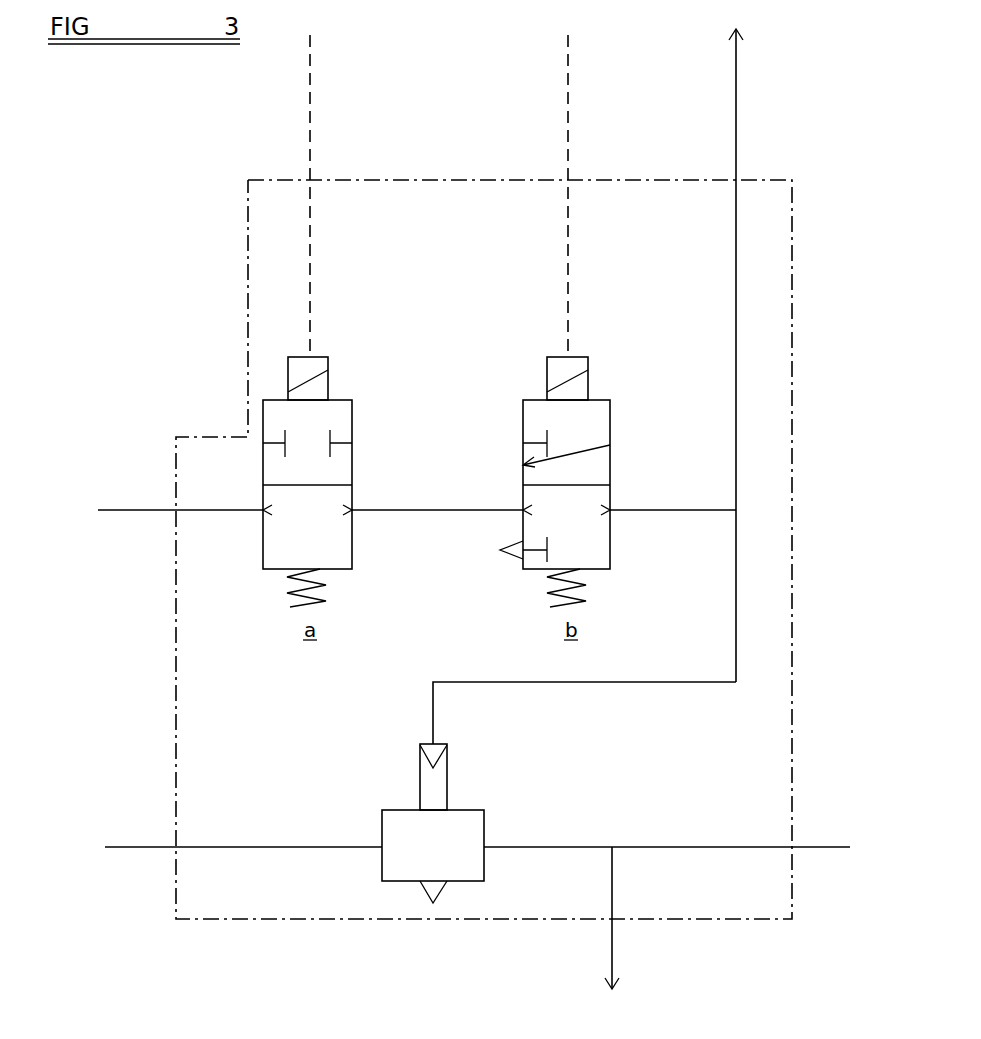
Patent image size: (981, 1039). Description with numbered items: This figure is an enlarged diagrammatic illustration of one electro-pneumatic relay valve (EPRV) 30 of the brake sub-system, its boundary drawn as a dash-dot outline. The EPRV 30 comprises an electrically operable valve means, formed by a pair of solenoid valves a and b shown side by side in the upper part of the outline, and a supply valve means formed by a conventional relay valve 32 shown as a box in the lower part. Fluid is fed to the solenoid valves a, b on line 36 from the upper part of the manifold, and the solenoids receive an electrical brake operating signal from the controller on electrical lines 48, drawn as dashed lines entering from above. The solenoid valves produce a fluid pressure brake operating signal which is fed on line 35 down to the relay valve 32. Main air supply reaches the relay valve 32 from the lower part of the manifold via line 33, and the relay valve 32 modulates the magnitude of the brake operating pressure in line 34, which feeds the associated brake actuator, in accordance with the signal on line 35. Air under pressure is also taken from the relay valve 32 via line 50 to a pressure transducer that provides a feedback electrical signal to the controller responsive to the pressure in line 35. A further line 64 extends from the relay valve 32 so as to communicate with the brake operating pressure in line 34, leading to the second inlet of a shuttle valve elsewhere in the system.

The electro-pneumatic relay valve 30 is at (762, 178).
The electrical lines 48 is at (312, 150).
The line 50 is at (736, 105).
The line 36 is at (135, 512).
The line 35 is at (628, 683).
The relay valve 32 is at (484, 828).
The line 33 is at (265, 848).
The line 64 is at (822, 846).
The line 34 is at (612, 940).